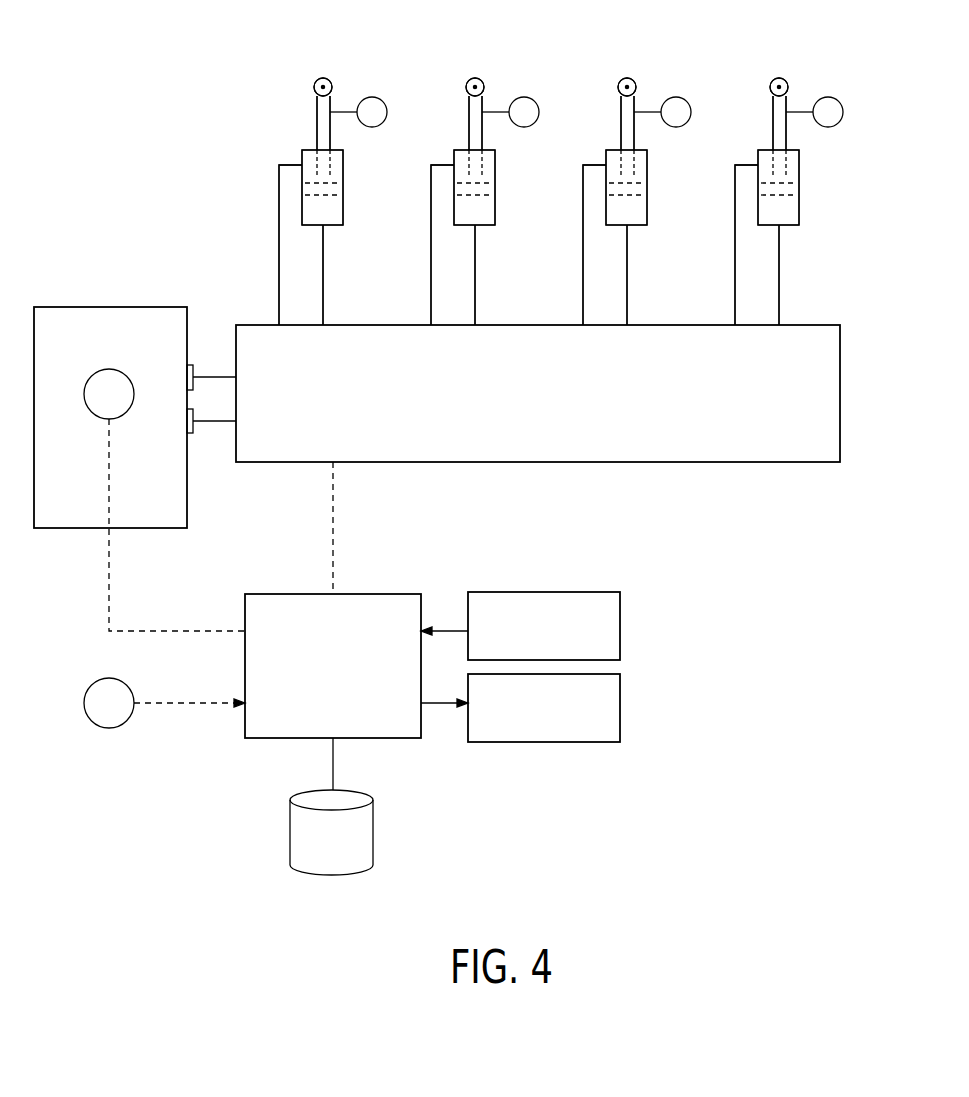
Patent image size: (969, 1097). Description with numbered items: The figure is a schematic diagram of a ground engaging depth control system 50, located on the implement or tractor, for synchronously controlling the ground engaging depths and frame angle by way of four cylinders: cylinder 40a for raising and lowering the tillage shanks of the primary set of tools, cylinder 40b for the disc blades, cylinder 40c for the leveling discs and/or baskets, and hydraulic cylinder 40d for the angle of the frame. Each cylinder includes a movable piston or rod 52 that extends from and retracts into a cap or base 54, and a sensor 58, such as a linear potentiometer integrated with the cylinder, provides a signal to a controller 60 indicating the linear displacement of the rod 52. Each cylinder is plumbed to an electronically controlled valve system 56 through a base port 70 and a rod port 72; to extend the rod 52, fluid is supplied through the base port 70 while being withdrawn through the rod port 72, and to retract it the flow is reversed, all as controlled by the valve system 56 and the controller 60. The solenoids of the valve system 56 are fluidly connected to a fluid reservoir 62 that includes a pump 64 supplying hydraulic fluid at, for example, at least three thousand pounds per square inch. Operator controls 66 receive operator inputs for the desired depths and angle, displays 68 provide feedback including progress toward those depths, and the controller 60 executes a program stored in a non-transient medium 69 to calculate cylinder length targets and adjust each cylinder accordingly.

The ground engaging depth control system 50 is at (175, 128).
The cylinder 40a is at (371, 221).
The cylinder 40b is at (499, 165).
The cylinder 40c is at (651, 165).
The hydraulic cylinder 40d is at (803, 165).
The rod 52 is at (316, 118).
The base 54 is at (344, 208).
The valve system 56 is at (561, 407).
The sensor 58 is at (332, 106).
The controller 60 is at (375, 594).
The fluid reservoir 62 is at (110, 307).
The pump 64 is at (88, 402).
The operator controls 66 is at (545, 592).
The displays 68 is at (545, 742).
The non-transient medium 69 is at (333, 874).
The base port 70 is at (323, 275).
The rod port 72 is at (280, 245).